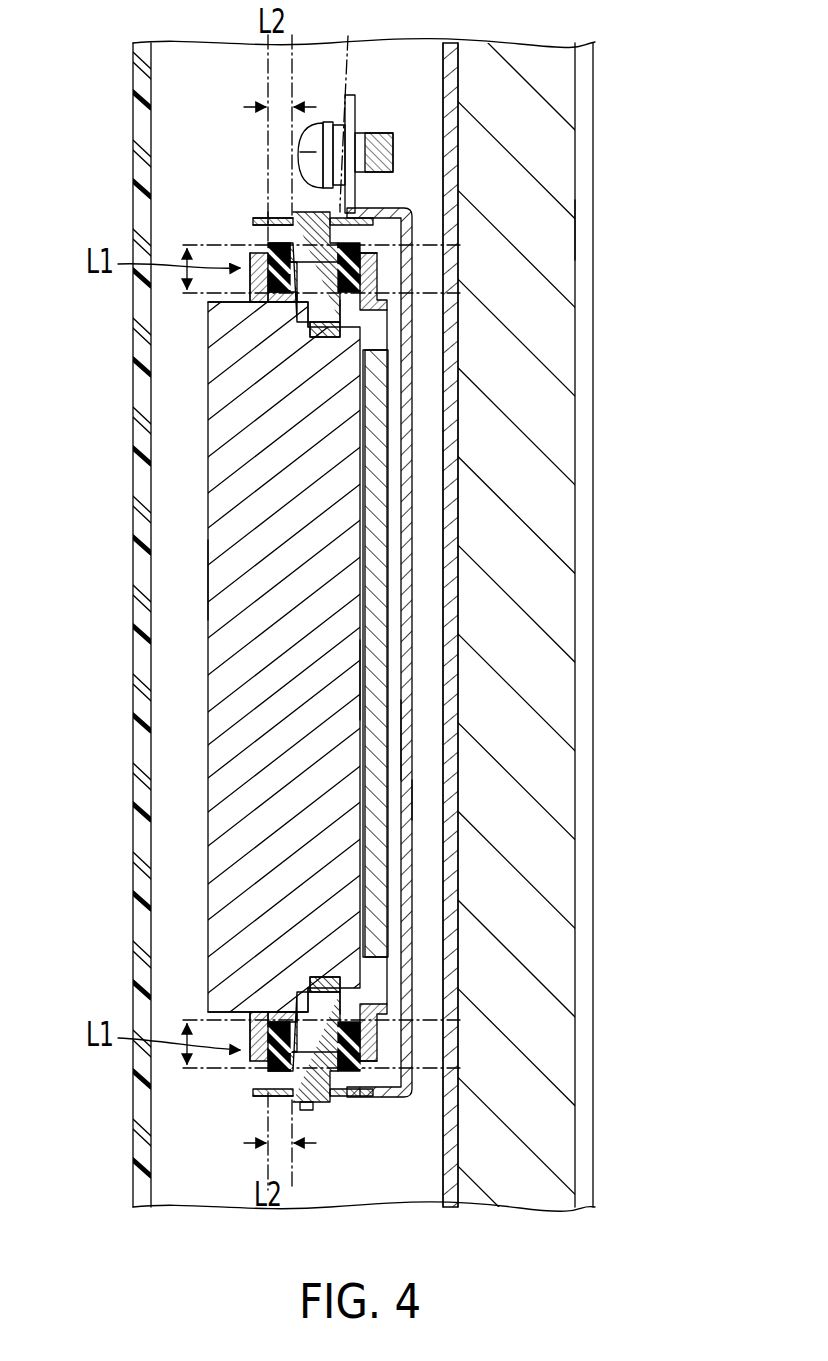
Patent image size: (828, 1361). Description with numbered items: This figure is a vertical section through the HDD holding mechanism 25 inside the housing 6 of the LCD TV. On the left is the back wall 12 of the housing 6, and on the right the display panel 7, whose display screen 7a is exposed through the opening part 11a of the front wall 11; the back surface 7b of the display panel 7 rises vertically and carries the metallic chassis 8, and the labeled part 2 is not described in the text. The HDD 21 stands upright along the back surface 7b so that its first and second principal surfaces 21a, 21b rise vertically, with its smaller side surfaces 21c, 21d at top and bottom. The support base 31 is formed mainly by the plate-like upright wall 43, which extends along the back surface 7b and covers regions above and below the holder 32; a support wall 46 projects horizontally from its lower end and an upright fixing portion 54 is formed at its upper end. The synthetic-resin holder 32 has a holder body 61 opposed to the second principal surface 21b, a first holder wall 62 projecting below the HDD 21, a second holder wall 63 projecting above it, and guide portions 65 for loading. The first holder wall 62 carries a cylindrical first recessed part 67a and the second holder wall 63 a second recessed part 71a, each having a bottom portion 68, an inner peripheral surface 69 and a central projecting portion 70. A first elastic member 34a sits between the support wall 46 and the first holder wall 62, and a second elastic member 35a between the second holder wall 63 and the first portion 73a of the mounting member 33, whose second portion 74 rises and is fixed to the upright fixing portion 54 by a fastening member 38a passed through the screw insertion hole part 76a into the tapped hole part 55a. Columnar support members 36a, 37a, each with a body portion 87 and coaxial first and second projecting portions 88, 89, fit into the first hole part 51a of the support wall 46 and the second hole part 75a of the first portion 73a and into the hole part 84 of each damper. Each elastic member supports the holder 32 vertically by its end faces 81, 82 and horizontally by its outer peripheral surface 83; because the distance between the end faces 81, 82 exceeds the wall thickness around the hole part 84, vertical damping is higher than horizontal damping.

The camera module frame 2 is at (597, 86).
The housing 6 is at (135, 102).
The display panel 7 is at (573, 405).
The display screen 7a is at (580, 533).
The back surface 7b is at (452, 601).
The metallic chassis 8 is at (452, 690).
The front wall 11 is at (596, 305).
The opening part 11a is at (584, 232).
The back wall 12 is at (140, 374).
The HDD 21 is at (217, 657).
The first principal surface 21a is at (207, 578).
The second principal surface 21b is at (378, 680).
The side surface 21c is at (210, 315).
The side surface 21d is at (210, 990).
The holding mechanism 25 is at (423, 799).
The support base 31 is at (419, 490).
The holder 32 is at (393, 740).
The mounting member 33 is at (283, 216).
The first elastic member 34a is at (275, 1097).
The second elastic member 35a is at (264, 230).
The first support member 36a is at (322, 1110).
The second support member 37a is at (414, 213).
The fastening member 38a is at (327, 121).
The upright wall 43 is at (412, 568).
The support wall 46 is at (365, 1100).
The first hole part 51a is at (340, 1100).
The upright fixing portion 54 is at (356, 125).
The tapped hole part 55a is at (346, 140).
The holder body 61 is at (367, 580).
The first holder wall 62 is at (256, 1040).
The second holder wall 63 is at (252, 302).
The guide portion 65 is at (326, 339).
The first recessed part 67a is at (258, 1069).
The bottom portion 68 is at (395, 320).
The inner peripheral surface 69 is at (378, 252).
The projecting portion 70 is at (320, 285).
The second recessed part 71a is at (246, 251).
The first portion 73a is at (257, 216).
The second portion 74 is at (394, 153).
The second hole part 75a is at (272, 206).
The screw insertion hole part 76a is at (350, 107).
The end face 81 is at (268, 330).
The end face 82 is at (364, 242).
The outer peripheral surface 83 is at (390, 290).
The hole part 84 is at (296, 280).
The body portion 87 is at (268, 243).
The first projecting portion 88 is at (346, 312).
The second projecting portion 89 is at (353, 205).